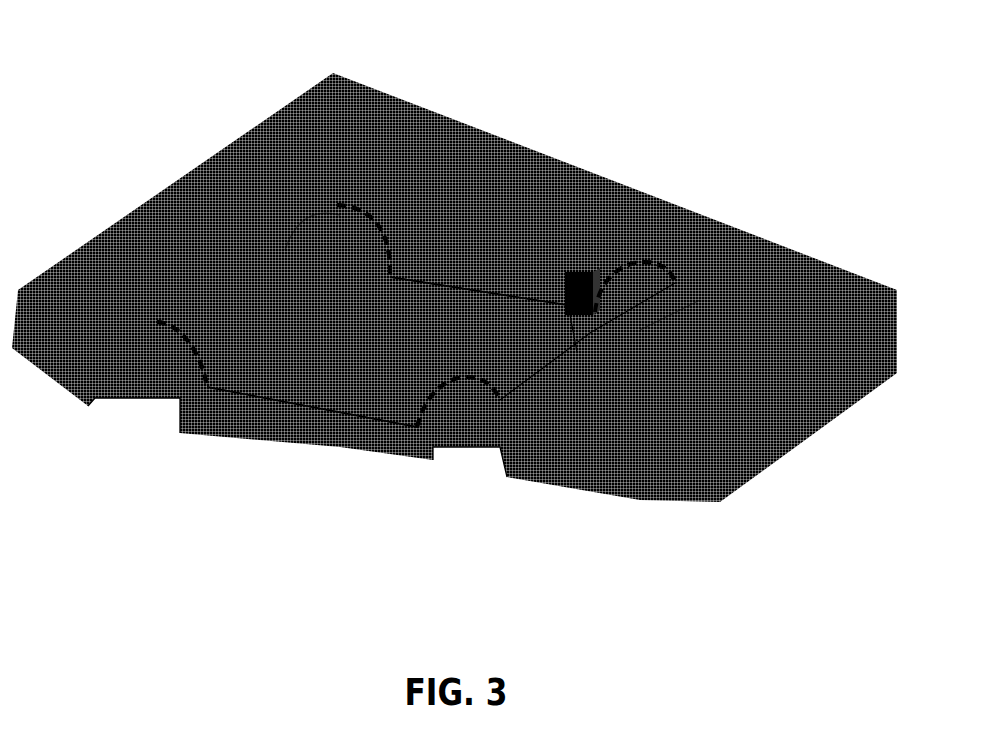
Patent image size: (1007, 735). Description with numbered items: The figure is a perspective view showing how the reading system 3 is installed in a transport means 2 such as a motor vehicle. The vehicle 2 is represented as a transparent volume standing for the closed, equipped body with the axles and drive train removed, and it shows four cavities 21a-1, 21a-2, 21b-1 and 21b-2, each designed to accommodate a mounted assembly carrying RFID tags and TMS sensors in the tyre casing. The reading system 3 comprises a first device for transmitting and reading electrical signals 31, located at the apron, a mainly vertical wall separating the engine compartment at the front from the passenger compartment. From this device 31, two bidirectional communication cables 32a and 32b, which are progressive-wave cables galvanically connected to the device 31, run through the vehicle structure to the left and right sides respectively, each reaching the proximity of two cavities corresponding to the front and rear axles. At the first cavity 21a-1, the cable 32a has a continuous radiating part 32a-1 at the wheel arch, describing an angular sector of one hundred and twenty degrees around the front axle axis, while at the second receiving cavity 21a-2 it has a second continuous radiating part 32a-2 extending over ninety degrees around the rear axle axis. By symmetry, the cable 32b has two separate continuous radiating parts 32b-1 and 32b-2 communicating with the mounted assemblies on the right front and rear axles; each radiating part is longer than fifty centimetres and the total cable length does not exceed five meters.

The transport means 2 is at (749, 196).
The reading system 3 is at (500, 173).
The device for transmitting and reading electrical signals 31 is at (562, 265).
The bidirectional communication cable 32a is at (436, 271).
The continuous part 32a-1 is at (648, 248).
The continuous radiating second part 32a-2 is at (356, 197).
The bidirectional communication cable 32b is at (311, 425).
The continuous radiating part 32b-1 is at (410, 395).
The continuous radiating part 32b-2 is at (214, 346).
The first cavity 21a-1 is at (675, 310).
The second receiving cavity 21a-2 is at (299, 261).
The cavity 21b-1 is at (443, 457).
The cavity 21b-2 is at (131, 421).